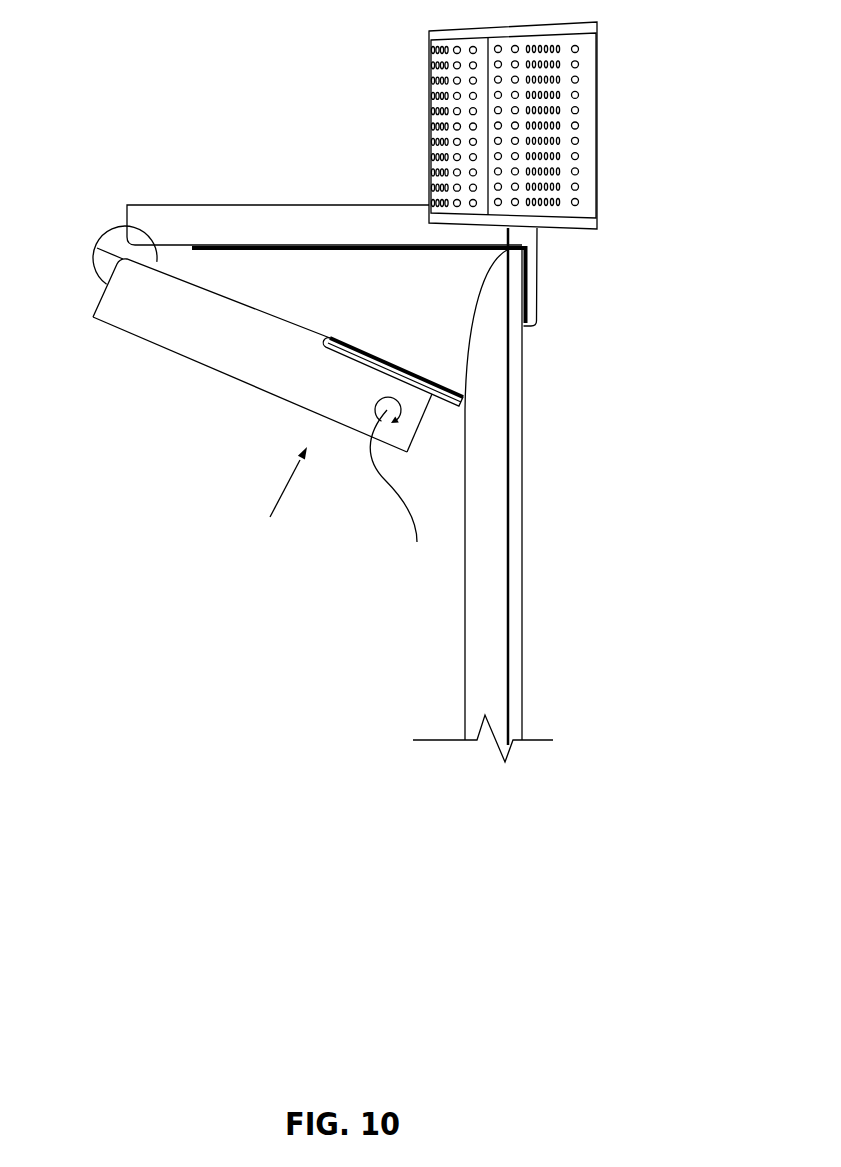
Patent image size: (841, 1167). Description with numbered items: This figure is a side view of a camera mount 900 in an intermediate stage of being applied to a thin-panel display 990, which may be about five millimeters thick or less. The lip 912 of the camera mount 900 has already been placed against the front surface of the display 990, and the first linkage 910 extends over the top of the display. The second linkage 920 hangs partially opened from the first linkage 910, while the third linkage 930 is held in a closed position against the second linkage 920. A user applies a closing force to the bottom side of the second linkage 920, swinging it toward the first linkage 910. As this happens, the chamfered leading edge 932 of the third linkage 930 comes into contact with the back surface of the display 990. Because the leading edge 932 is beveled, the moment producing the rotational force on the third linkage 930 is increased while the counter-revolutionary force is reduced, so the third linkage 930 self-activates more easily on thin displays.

The camera mount 900 is at (367, 392).
The first linkage 910 is at (270, 225).
The lip 912 is at (532, 263).
The second linkage 920 is at (170, 310).
The third linkage 930 is at (367, 363).
The chamfered leading edge 932 is at (463, 394).
The thin-panel display 990 is at (513, 543).